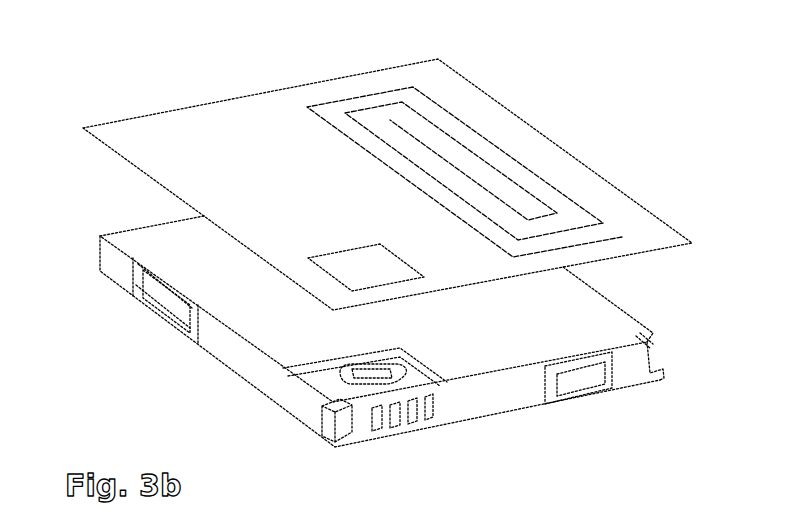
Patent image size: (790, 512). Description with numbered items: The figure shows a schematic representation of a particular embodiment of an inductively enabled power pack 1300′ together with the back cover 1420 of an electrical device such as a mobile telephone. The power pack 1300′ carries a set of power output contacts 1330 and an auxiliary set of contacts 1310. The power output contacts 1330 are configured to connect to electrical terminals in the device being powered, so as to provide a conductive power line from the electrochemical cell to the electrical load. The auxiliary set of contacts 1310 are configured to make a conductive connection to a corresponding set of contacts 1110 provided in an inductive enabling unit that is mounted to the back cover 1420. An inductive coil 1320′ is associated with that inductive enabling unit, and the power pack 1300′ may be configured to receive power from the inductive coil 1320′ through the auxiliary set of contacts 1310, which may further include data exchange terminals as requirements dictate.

The corresponding set of contacts 1110 is at (343, 262).
The inductively enabled power pack 1300′ is at (566, 316).
The auxiliary set of contacts 1310 is at (368, 374).
The inductive coil 1320′ is at (323, 103).
The power output contacts 1330 is at (410, 421).
The back cover 1420 is at (553, 165).